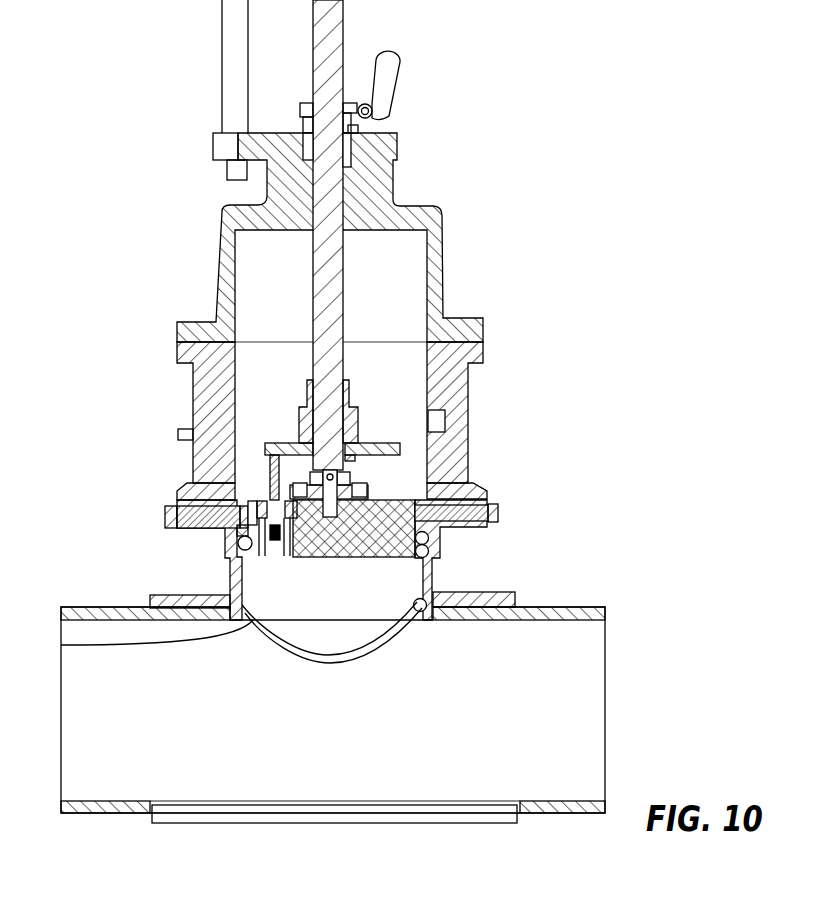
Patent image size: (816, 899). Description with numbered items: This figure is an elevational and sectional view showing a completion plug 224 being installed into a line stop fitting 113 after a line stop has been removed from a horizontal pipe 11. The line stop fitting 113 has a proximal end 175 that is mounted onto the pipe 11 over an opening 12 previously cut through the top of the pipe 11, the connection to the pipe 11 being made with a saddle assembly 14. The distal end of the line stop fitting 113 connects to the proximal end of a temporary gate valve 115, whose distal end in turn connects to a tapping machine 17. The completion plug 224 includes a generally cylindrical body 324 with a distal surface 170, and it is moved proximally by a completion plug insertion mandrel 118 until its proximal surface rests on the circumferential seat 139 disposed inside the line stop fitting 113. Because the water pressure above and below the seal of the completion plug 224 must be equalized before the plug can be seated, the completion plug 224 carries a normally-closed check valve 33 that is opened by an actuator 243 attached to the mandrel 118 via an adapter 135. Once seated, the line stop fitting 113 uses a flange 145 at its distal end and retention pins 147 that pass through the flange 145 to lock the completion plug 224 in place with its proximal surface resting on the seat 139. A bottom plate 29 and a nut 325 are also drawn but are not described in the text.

The pipe 11 is at (554, 604).
The opening 12 is at (61, 645).
The saddle assembly 14 is at (181, 591).
The tapping machine 17 is at (440, 230).
The bottom plate 29 is at (460, 802).
The check valve 33 is at (237, 531).
The line stop fitting 113 is at (445, 556).
The temporary gate valve 115 is at (470, 417).
The completion plug insertion mandrel 118 is at (343, 256).
The adapter 135 is at (367, 420).
The circumferential seat 139 is at (418, 553).
The flange 145 is at (458, 526).
The retention pins 147 is at (485, 501).
The distal surface 170 is at (391, 497).
The proximal end 175 is at (420, 610).
The completion plug 224 is at (300, 564).
The actuator 243 is at (270, 472).
The cylindrical body 324 is at (336, 540).
The stem nut 325 is at (353, 483).